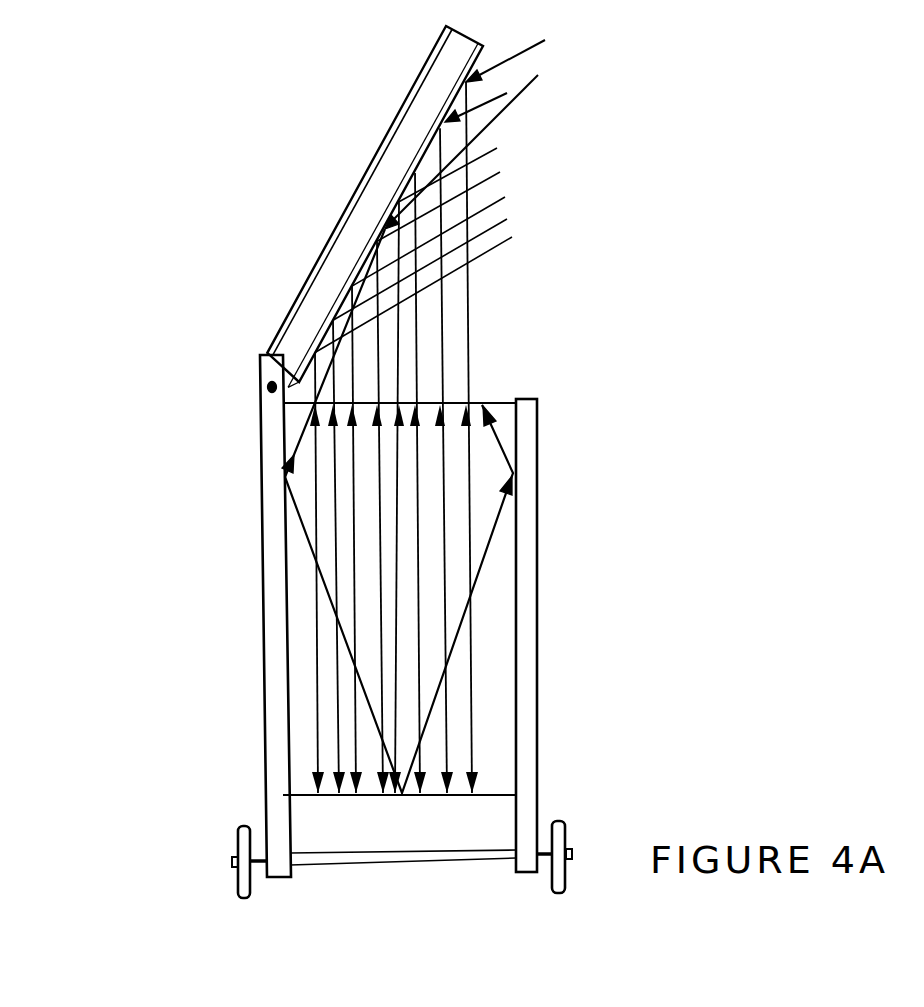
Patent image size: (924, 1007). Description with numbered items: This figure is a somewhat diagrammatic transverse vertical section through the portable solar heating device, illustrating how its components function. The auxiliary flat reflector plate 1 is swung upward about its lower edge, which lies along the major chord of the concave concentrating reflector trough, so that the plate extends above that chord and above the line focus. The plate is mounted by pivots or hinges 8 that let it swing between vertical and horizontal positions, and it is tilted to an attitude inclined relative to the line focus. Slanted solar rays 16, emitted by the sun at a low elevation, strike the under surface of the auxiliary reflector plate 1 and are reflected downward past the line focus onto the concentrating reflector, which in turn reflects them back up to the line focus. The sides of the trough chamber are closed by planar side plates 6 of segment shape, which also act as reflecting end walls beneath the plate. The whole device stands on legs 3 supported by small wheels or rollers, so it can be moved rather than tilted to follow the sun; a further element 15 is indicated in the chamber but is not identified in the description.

The auxiliary flat reflector plate 1 is at (341, 166).
The slanted solar rays 16 is at (445, 196).
The air flow path through heat exchange chamber 15 is at (500, 372).
The pivots or hinges 8 is at (240, 367).
The planar side plates 6 is at (258, 519).
The legs 3 is at (244, 799).